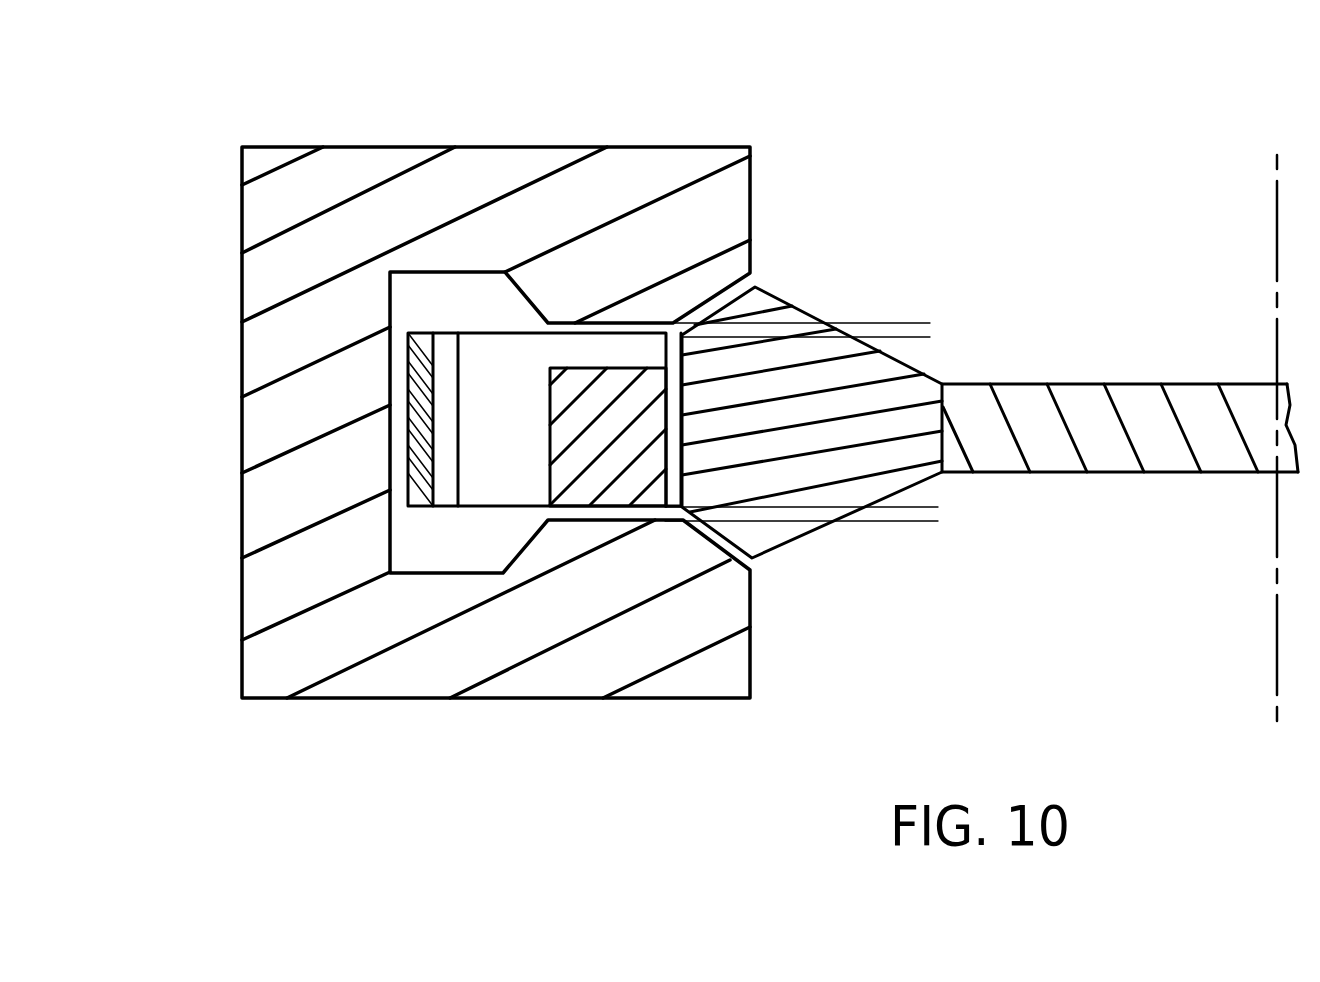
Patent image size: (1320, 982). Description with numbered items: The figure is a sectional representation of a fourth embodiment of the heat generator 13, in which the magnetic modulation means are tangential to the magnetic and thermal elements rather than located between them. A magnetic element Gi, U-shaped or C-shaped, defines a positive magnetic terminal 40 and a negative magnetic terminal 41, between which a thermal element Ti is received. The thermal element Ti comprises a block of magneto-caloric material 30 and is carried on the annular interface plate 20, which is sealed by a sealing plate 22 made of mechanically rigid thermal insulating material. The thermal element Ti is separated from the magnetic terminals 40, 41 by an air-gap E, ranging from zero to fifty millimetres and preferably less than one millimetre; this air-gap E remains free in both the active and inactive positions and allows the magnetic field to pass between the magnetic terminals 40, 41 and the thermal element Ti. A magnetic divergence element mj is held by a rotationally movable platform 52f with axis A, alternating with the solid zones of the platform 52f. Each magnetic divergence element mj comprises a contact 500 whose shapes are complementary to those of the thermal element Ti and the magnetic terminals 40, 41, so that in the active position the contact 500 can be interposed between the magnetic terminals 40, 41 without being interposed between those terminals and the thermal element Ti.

The generator 13 is at (198, 680).
The magnetic element Gi is at (298, 422).
The negative magnetic terminal 41 is at (682, 235).
The positive magnetic terminal 40 is at (695, 673).
The annular interface plate 20 is at (442, 397).
The sealing plate 22 is at (404, 408).
The thermal element Ti is at (495, 390).
The block of magneto-caloric material 30 is at (612, 455).
The contact 500 is at (757, 547).
The platform 52f is at (1150, 435).
The air-gap E is at (907, 352).
The magnetic divergence element mj is at (955, 509).